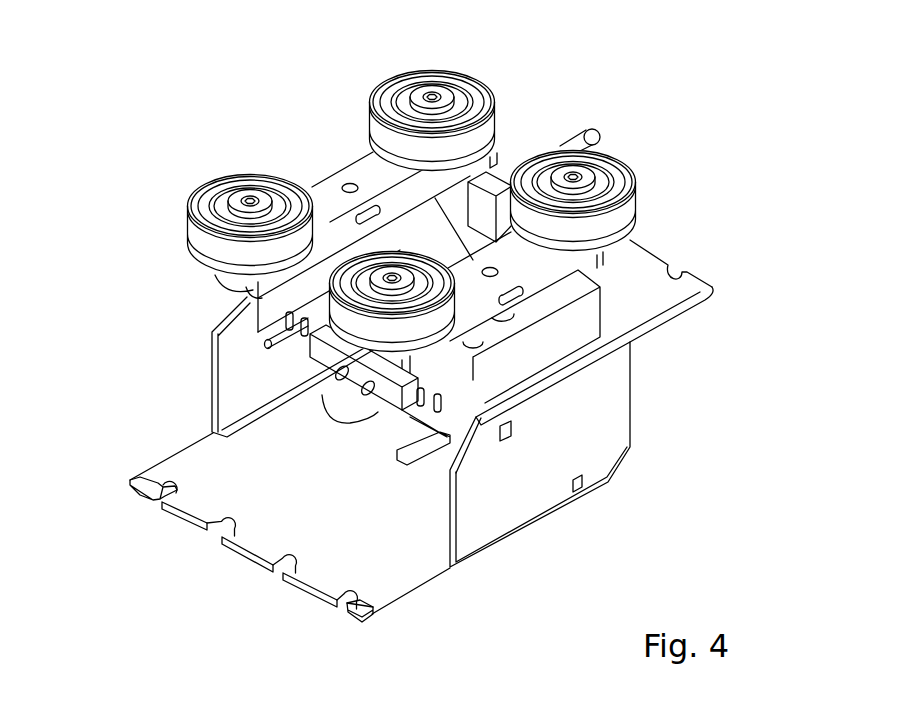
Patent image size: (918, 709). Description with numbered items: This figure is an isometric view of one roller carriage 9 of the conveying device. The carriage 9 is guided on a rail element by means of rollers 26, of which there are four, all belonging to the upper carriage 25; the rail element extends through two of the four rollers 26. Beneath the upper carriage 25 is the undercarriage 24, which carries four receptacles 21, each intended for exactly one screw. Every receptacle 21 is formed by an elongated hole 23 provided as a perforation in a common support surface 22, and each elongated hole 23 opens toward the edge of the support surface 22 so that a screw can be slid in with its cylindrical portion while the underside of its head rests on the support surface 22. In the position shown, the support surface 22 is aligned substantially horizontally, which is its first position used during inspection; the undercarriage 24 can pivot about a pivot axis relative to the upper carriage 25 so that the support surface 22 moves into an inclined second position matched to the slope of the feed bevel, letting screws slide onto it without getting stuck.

The carriage 9 is at (650, 108).
The receptacle 21 is at (151, 510).
The support surface 22 is at (212, 432).
The elongated hole 23 is at (160, 486).
The undercarriage 24 is at (644, 458).
The upper carriage 25 is at (684, 239).
The roller 26 is at (257, 185).